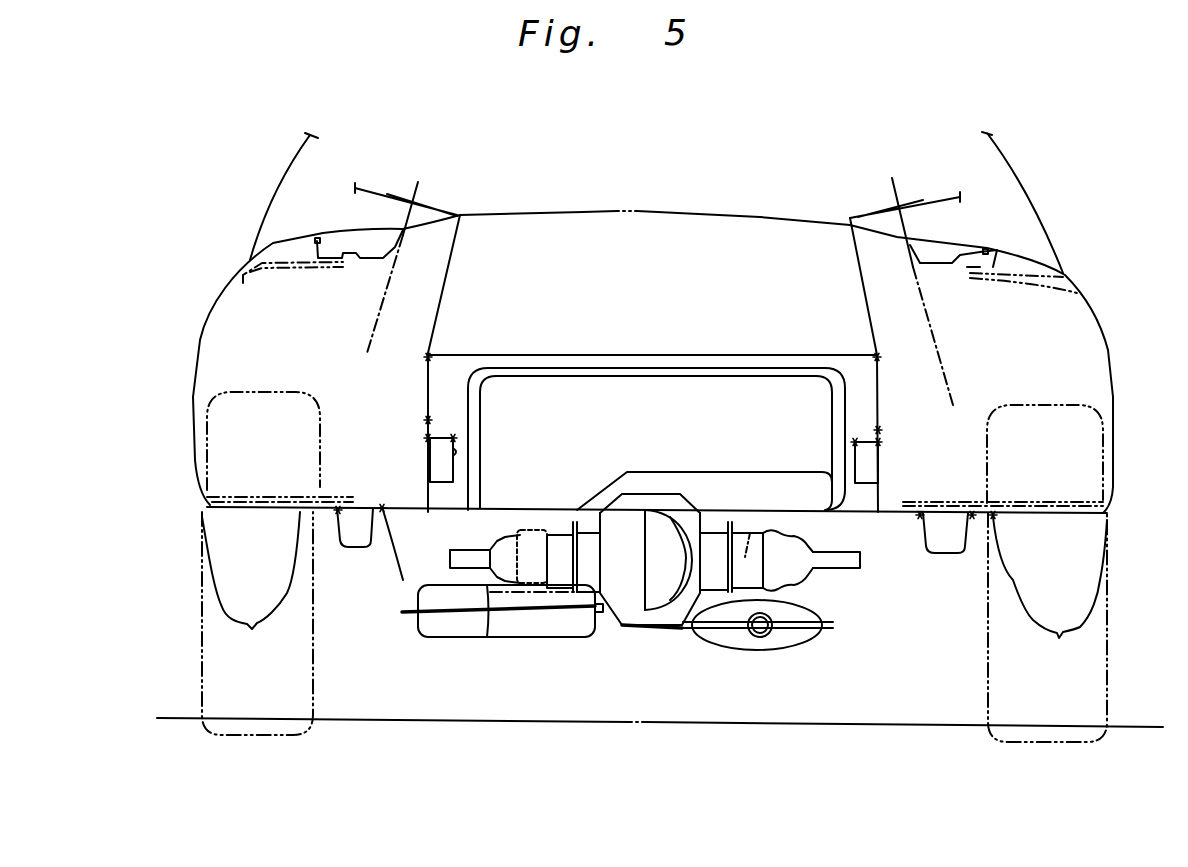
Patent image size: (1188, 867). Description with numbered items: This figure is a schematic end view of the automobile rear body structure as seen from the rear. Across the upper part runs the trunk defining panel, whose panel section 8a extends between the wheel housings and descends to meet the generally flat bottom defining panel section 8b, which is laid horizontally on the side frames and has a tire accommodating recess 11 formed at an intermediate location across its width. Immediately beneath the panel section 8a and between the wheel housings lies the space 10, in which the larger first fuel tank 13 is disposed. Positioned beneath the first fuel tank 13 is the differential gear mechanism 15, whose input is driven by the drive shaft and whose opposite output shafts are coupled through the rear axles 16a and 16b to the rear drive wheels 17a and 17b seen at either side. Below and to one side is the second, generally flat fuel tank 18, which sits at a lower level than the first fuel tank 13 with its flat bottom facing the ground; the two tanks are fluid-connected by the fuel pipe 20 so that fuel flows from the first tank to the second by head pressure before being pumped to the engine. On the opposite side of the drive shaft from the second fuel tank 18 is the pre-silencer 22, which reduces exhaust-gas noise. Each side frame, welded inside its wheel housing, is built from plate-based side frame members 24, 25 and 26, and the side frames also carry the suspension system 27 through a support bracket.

The panel section 8a is at (523, 353).
The bottom defining panel section 8b is at (887, 513).
The space 10 is at (453, 373).
The tire accommodating recess 11 is at (397, 588).
The first fuel tank 13 is at (607, 397).
The differential gear mechanism 15 is at (645, 637).
The rear axle 16a is at (843, 573).
The rear axle 16b is at (463, 548).
The rear drive wheel 17a is at (1110, 662).
The rear drive wheel 17b is at (202, 662).
The second fuel tank 18 is at (550, 632).
The fuel pipe 20 is at (527, 507).
The pre-silencer 22 is at (785, 642).
The side frame member 24 is at (437, 467).
The side frame member 25 is at (430, 447).
The side frame member 26 is at (338, 549).
The suspension system 27 is at (438, 186).